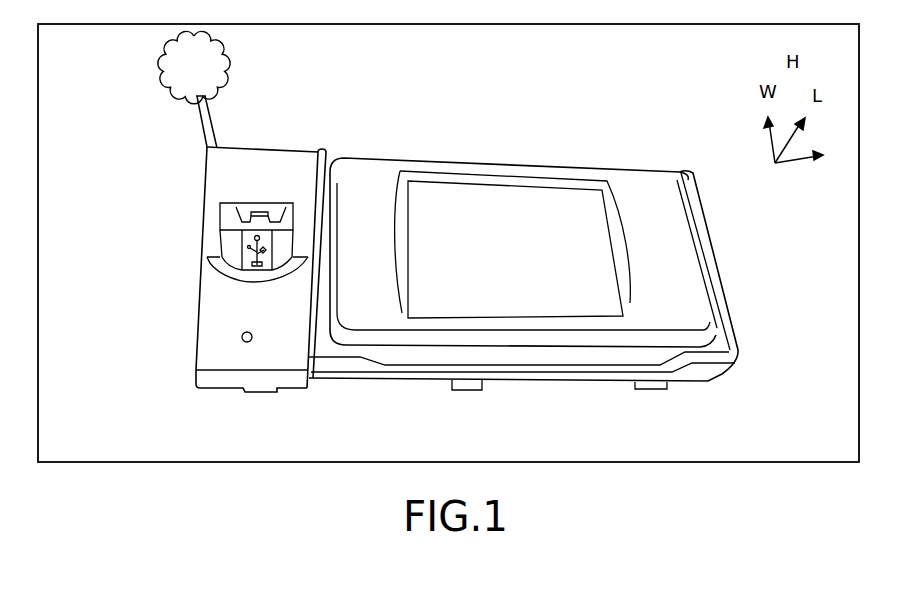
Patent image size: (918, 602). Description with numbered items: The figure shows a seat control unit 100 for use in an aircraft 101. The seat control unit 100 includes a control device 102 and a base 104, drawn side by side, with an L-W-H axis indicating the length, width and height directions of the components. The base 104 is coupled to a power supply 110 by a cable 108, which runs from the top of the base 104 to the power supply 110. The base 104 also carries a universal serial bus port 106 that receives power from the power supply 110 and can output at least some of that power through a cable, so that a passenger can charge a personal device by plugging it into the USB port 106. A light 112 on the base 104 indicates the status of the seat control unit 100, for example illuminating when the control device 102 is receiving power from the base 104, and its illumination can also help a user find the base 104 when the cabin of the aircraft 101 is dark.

The seat control unit 100 is at (181, 321).
The aircraft 101 is at (212, 462).
The control device 102 is at (703, 282).
The base 104 is at (199, 358).
The universal serial bus (USB) port 106 is at (247, 208).
The cable 108 is at (213, 128).
The power supply 110 is at (227, 52).
The light 112 is at (253, 343).